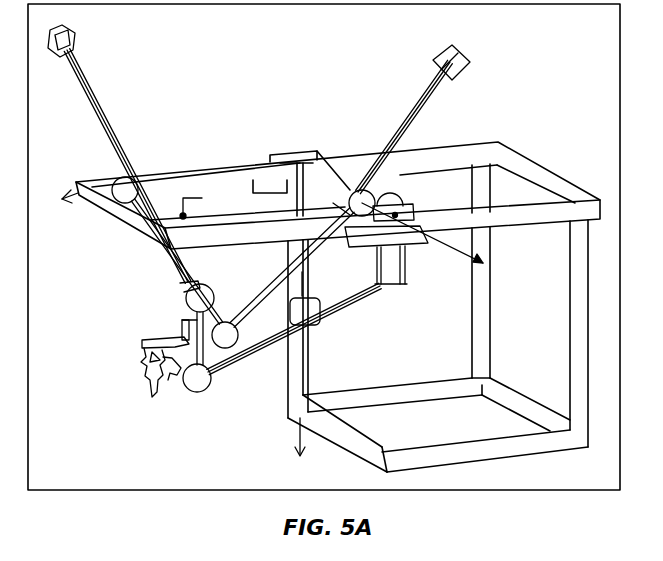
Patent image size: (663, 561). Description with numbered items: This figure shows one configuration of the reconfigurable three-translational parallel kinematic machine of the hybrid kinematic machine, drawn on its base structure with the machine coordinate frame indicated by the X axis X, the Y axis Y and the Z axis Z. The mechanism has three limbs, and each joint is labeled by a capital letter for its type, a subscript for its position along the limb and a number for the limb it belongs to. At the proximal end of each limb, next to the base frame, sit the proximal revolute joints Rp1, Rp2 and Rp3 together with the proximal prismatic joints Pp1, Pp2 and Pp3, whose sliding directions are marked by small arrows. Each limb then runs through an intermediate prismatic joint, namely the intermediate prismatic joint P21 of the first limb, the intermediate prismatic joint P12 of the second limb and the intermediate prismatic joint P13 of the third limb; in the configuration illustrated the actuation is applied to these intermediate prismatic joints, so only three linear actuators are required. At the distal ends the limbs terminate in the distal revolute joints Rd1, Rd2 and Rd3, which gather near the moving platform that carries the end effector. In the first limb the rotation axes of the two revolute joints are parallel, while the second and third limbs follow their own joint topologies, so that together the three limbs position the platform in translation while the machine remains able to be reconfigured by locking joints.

The proximal revolute joint of limb 1 Rp1 is at (362, 203).
The proximal revolute joint of limb 2 Rp2 is at (125, 190).
The proximal revolute joint of limb 3 Rp3 is at (305, 311).
The distal revolute joint of limb 1 Rd1 is at (225, 335).
The distal revolute joint of limb 2 Rd2 is at (200, 298).
The distal revolute joint of limb 3 Rd3 is at (197, 378).
The proximal prismatic joint of limb 1 Pp1 is at (328, 202).
The proximal prismatic joint of limb 2 Pp2 is at (183, 206).
The proximal prismatic joint of limb 3 Pp3 is at (318, 284).
The intermediate prismatic joint of limb 2 P12 is at (175, 282).
The intermediate prismatic joint of limb 3 P13 is at (236, 368).
The intermediate prismatic joint of limb 1 P21 is at (277, 268).
The X axis X is at (430, 242).
The Y axis Y is at (62, 198).
The Z axis Z is at (300, 446).